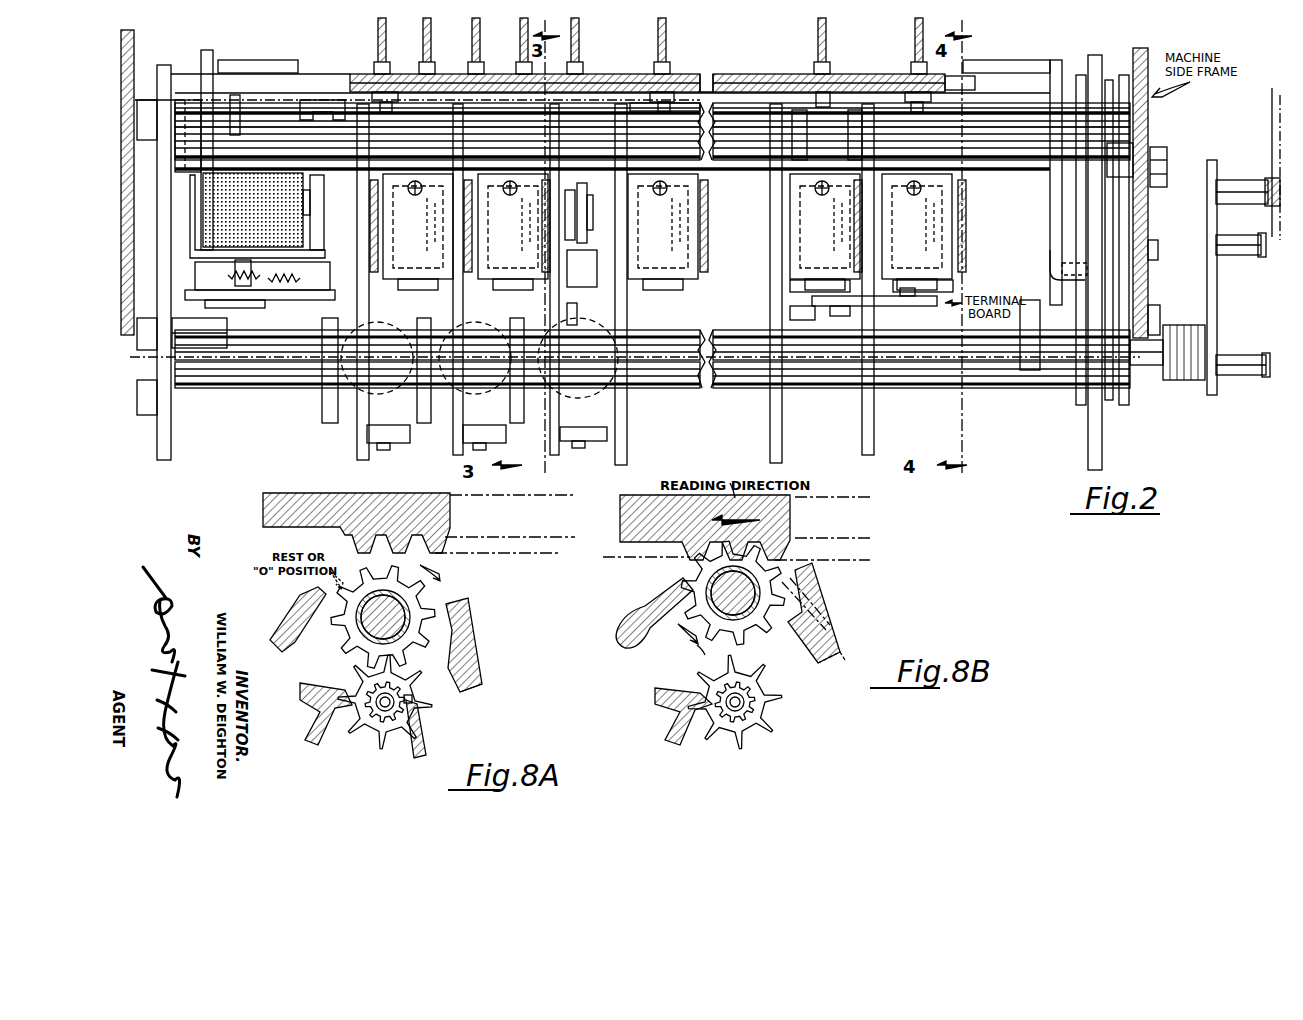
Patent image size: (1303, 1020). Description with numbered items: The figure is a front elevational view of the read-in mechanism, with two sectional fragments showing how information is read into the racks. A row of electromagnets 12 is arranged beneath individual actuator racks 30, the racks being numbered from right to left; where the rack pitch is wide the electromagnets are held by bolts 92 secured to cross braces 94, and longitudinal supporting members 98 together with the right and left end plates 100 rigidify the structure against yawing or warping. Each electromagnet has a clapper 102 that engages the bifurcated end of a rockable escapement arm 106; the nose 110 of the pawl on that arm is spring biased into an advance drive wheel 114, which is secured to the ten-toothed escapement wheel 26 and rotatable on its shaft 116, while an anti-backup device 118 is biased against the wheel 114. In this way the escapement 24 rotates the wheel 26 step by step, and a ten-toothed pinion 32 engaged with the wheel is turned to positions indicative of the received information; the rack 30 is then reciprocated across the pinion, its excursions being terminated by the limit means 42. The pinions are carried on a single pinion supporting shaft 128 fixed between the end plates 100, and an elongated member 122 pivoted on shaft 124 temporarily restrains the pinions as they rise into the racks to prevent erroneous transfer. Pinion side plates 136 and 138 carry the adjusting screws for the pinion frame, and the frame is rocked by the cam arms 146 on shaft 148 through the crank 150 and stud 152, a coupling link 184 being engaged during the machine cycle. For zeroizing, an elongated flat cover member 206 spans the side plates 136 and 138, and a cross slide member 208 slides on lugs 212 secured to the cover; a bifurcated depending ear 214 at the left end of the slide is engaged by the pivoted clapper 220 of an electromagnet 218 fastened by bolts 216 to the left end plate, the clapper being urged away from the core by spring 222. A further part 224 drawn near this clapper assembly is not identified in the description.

In FIG. 2, the electromagnet 12 is at (708, 216).
In FIG. 8A, the escapement 24 is at (290, 686).
In FIG. 8B, the escapement 24 is at (622, 730).
In FIG. 2, the escapement wheel 26 is at (382, 218).
In FIG. 8A, the escapement wheel 26 is at (362, 736).
In FIG. 8B, the escapement wheel 26 is at (778, 702).
In FIG. 2, the actuator rack 30 is at (524, 58).
In FIG. 8A, the actuator rack 30 is at (308, 546).
In FIG. 8B, the actuator rack 30 is at (790, 522).
In FIG. 2, the pinion 32 is at (474, 72).
In FIG. 8B, the pinion 32 is at (705, 648).
In FIG. 2, the limit means 42 is at (690, 112).
In FIG. 8A, the limit means 42 is at (292, 626).
In FIG. 8B, the limit means 42 is at (646, 616).
In FIG. 2, the bolts 92 is at (320, 404).
In FIG. 2, the cross brace 94 is at (782, 330).
In FIG. 2, the longitudinal supporting member 98 is at (1034, 158).
In FIG. 2, the end plate 100 is at (170, 432).
In FIG. 2, the clapper 102 is at (393, 432).
In FIG. 2, the escapement arm 106 is at (577, 258).
In FIG. 2, the nose of pawl 110 is at (578, 232).
In FIG. 2, the advance drive wheel 114 is at (582, 196).
In FIG. 8A, the advance drive wheel 114 is at (385, 730).
In FIG. 8B, the advance drive wheel 114 is at (735, 730).
In FIG. 8A, the shaft 116 is at (410, 700).
In FIG. 8A, the anti-backup device 118 is at (420, 740).
In FIG. 8A, the elongated member 122 is at (470, 637).
In FIG. 8B, the elongated member 122 is at (822, 608).
In FIG. 8A, the shaft 124 is at (478, 704).
In FIG. 8B, the shaft 124 is at (828, 660).
In FIG. 8A, the pinion supporting shaft 128 is at (372, 628).
In FIG. 8B, the pinion supporting shaft 128 is at (748, 604).
In FIG. 2, the pinion side plate 136 is at (208, 62).
In FIG. 2, the pinion side plate 138 is at (1052, 262).
In FIG. 2, the cam arm 146 is at (180, 70).
In FIG. 2, the shaft 148 is at (1162, 338).
In FIG. 2, the crank 150 is at (1216, 300).
In FIG. 2, the stud 152 is at (1280, 184).
In FIG. 2, the coupling link 184 is at (1270, 136).
In FIG. 2, the cover member 206 is at (720, 75).
In FIG. 2, the cross slide member 208 is at (803, 76).
In FIG. 2, the lugs 212 is at (386, 90).
In FIG. 2, the bifurcated depending ear 214 is at (332, 112).
In FIG. 2, the bolts 216 is at (305, 270).
In FIG. 2, the electromagnet 218 is at (300, 182).
In FIG. 2, the pivoted clapper 220 is at (312, 228).
In FIG. 2, the spring 222 is at (288, 284).
In FIG. 2, the armature 224 is at (311, 205).